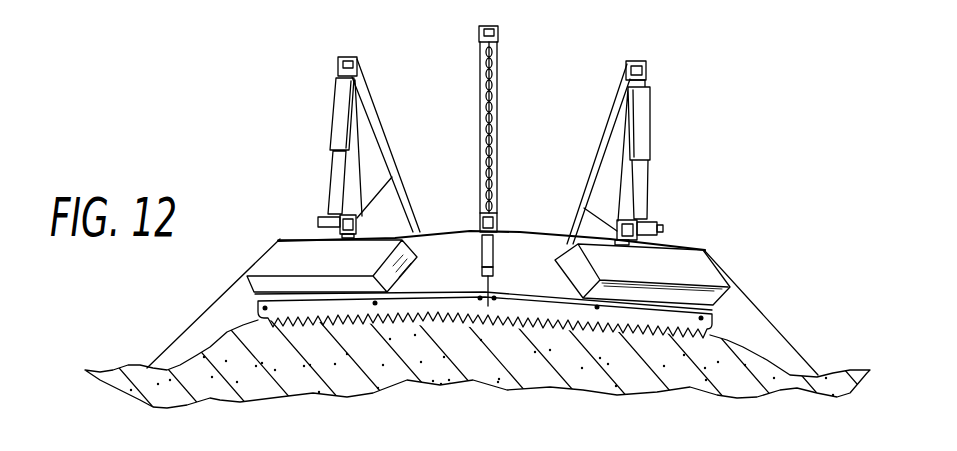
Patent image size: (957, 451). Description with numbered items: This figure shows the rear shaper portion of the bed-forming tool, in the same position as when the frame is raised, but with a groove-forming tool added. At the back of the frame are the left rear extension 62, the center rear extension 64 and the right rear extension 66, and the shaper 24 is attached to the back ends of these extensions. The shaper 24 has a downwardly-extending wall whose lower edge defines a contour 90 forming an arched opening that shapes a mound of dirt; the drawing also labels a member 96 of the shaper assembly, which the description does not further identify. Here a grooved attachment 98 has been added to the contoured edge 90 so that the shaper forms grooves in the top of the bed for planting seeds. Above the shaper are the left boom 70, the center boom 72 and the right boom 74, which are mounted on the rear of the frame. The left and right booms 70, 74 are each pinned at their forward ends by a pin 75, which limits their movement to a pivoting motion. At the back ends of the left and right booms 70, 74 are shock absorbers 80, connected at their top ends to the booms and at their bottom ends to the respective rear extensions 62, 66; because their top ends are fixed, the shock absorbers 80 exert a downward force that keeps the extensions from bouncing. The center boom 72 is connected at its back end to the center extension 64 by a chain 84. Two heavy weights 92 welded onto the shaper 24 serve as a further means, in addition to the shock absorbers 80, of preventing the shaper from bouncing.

The shaper 24 is at (218, 304).
The left rear extension 62 is at (365, 224).
The center rear extension 64 is at (498, 218).
The right rear extension 66 is at (603, 232).
The left boom 70 is at (373, 104).
The center boom 72 is at (499, 31).
The right boom 74 is at (613, 93).
The pin 75 is at (664, 229).
The shock absorber 80 is at (336, 111).
The chain 84 is at (493, 78).
The contour 90 is at (727, 337).
The weight 92 is at (268, 252).
The beam 96 is at (448, 237).
The grooved attachment 98 is at (421, 303).